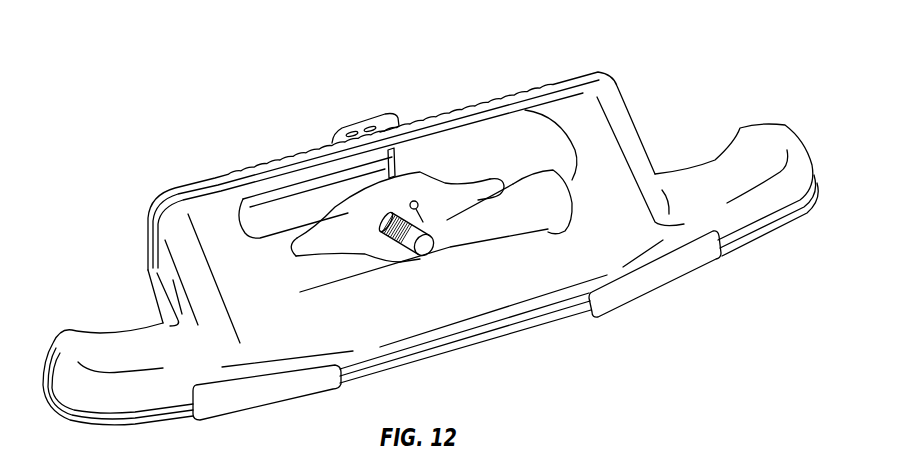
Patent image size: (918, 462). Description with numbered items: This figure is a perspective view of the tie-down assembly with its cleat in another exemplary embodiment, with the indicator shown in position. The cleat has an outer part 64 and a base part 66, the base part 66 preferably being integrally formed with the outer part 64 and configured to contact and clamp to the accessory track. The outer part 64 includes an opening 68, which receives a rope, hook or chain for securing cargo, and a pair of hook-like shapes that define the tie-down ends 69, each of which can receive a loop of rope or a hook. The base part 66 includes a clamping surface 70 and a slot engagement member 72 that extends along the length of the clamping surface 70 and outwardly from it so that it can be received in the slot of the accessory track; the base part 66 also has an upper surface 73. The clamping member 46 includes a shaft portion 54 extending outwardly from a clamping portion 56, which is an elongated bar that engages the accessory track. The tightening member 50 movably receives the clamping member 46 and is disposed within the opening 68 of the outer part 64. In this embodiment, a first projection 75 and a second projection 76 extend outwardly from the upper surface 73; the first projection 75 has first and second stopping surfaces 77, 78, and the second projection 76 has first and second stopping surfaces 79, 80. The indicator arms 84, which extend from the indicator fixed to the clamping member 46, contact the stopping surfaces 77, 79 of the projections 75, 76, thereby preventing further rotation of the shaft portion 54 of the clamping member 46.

The clamping member 46 is at (337, 105).
The tightening member 50 is at (336, 262).
The shaft portion 54 is at (420, 248).
The clamping portion 56 is at (360, 118).
The outer part 64 is at (512, 337).
The base part 66 is at (634, 128).
The opening 68 is at (558, 233).
The tie-down ends 69 is at (53, 344).
The clamping surface 70 is at (300, 145).
The slot engagement member 72 is at (147, 220).
The upper surface 73 is at (518, 132).
The first projection 75 is at (273, 210).
The second projection 76 is at (508, 227).
The first stopping surface 77 is at (258, 222).
The second stopping surface 78 is at (412, 150).
The first stopping surface 79 is at (532, 168).
The second stopping surface 80 is at (394, 264).
The indicator arms 84 is at (292, 257).